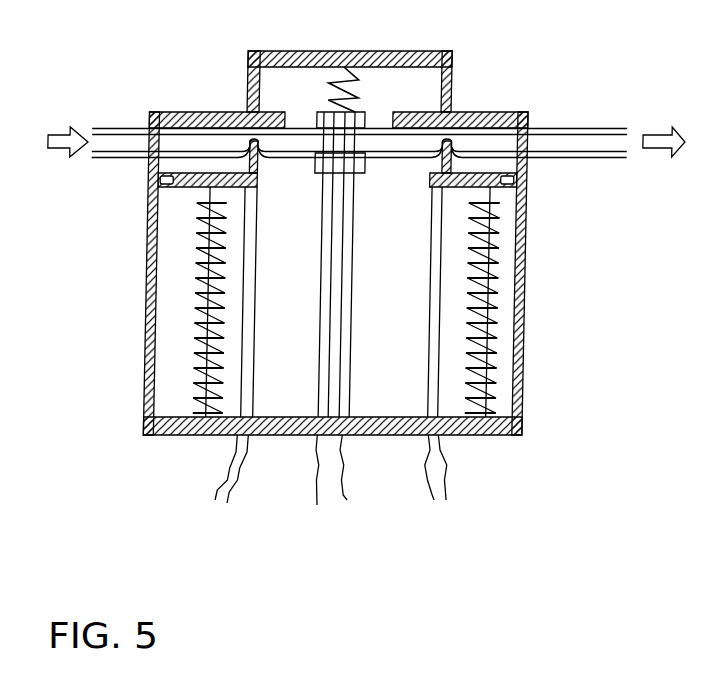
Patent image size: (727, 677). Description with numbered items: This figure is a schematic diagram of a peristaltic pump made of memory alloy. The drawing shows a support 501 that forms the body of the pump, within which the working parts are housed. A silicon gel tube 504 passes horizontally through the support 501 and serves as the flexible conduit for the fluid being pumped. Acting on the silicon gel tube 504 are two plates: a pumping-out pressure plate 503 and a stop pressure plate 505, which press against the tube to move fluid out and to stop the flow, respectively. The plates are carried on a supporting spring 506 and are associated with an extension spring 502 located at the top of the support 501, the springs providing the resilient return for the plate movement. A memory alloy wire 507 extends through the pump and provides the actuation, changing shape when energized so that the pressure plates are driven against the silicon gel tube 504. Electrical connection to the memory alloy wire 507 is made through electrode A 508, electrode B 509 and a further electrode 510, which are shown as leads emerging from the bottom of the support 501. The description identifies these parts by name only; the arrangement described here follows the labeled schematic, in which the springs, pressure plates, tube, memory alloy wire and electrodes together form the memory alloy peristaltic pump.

The support 501 is at (353, 80).
The extension spring 502 is at (350, 80).
The pumping-out pressure plate 503 is at (333, 113).
The silicon gel tube 504 is at (560, 127).
The stop pressure plate 505 is at (160, 186).
The supporting spring 506 is at (205, 312).
The memory alloy wire 507 is at (248, 357).
The electrode A 508 is at (213, 508).
The electrode B 509 is at (337, 508).
The electrode 510 is at (463, 495).